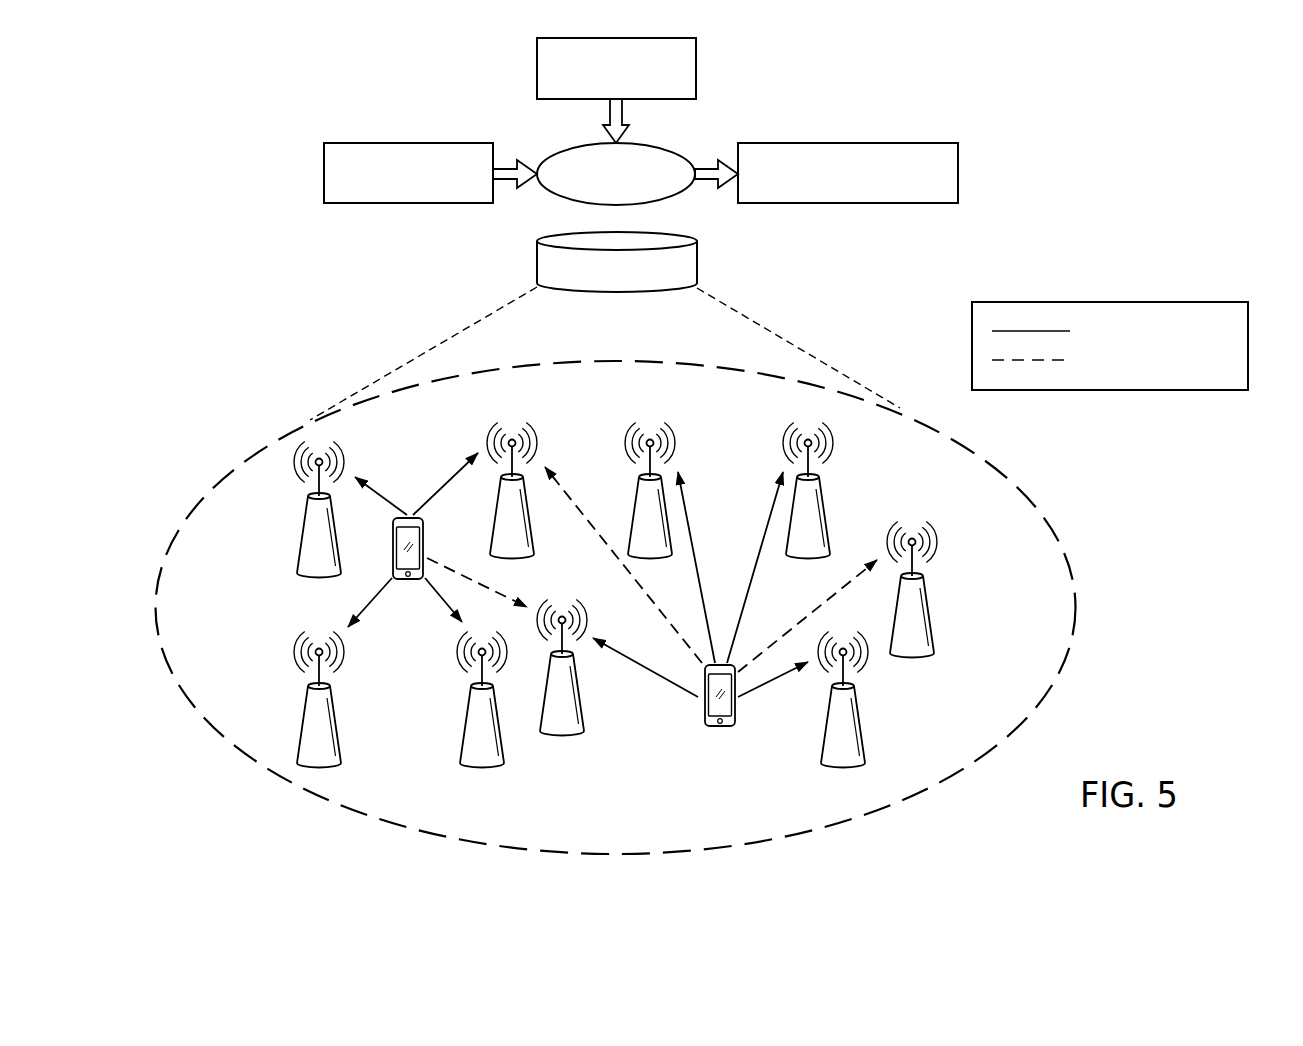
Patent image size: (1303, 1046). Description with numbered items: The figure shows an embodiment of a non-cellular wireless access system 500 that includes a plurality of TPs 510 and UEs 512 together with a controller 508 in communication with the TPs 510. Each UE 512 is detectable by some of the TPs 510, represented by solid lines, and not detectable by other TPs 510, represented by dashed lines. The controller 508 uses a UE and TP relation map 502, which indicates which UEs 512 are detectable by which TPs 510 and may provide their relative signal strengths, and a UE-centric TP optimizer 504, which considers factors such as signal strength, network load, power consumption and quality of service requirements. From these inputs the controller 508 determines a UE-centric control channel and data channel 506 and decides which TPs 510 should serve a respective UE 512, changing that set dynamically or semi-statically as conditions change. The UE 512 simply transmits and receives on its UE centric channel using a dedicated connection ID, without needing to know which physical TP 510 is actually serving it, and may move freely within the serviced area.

The non-cellular wireless access system 500 is at (1100, 93).
The UE and TP relation map 502 is at (410, 143).
The UE-centric TP optimizer 504 is at (537, 68).
The UE-centric control channel and data channel 506 is at (848, 143).
The controller 508 is at (557, 151).
The transmission point (TP) 510 is at (305, 532).
The user equipment (UE) 512 is at (406, 580).